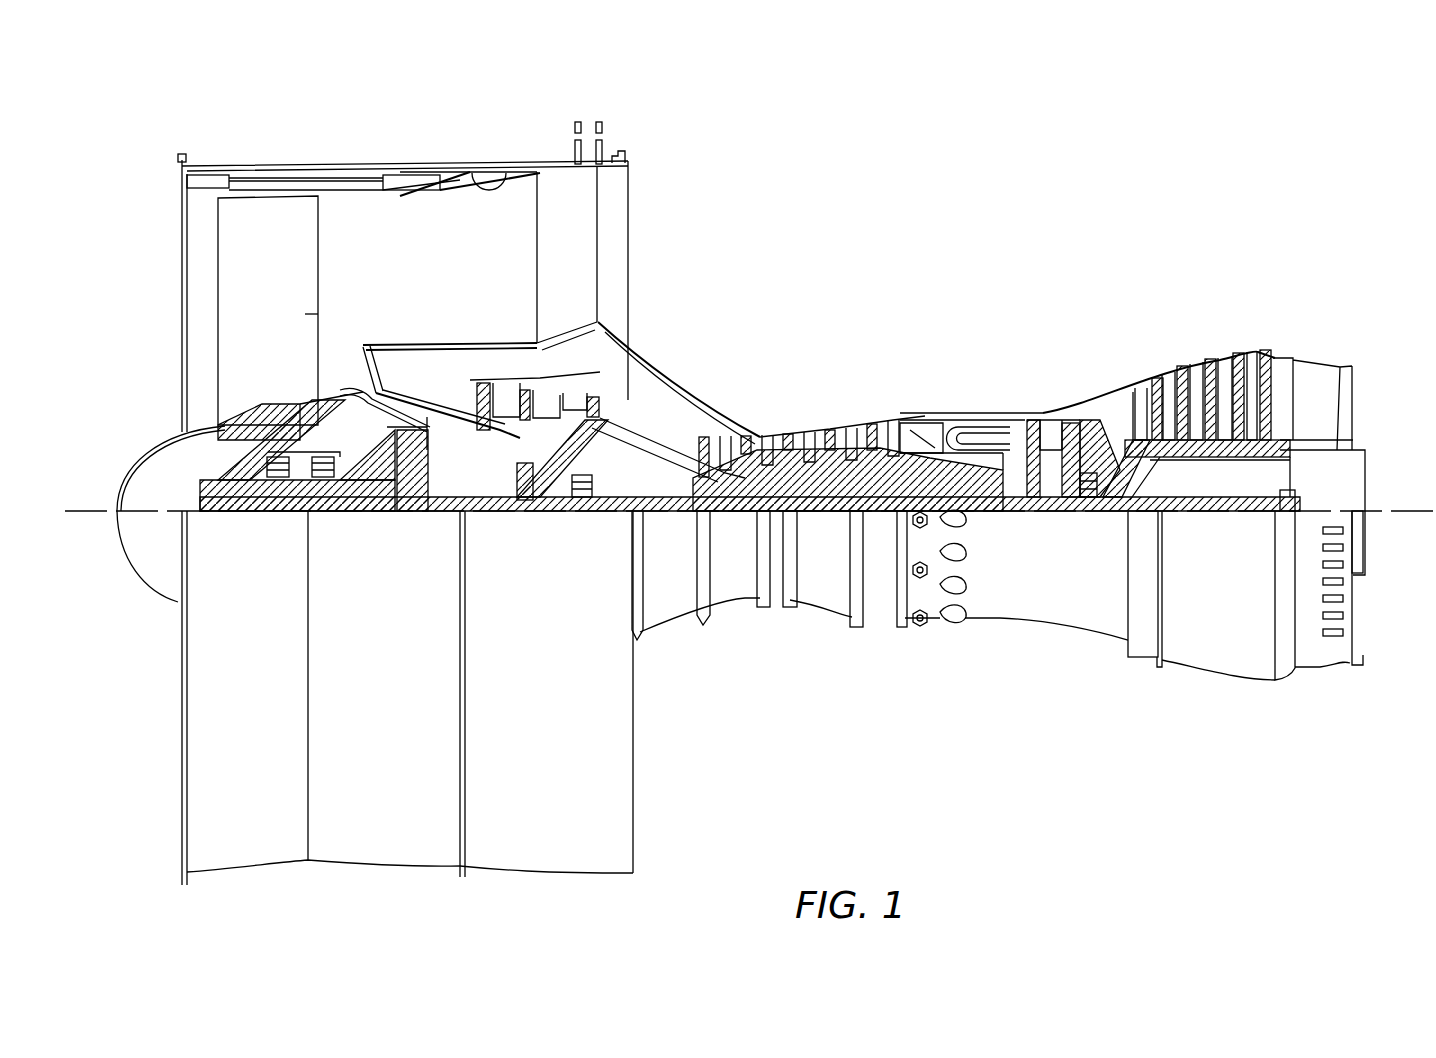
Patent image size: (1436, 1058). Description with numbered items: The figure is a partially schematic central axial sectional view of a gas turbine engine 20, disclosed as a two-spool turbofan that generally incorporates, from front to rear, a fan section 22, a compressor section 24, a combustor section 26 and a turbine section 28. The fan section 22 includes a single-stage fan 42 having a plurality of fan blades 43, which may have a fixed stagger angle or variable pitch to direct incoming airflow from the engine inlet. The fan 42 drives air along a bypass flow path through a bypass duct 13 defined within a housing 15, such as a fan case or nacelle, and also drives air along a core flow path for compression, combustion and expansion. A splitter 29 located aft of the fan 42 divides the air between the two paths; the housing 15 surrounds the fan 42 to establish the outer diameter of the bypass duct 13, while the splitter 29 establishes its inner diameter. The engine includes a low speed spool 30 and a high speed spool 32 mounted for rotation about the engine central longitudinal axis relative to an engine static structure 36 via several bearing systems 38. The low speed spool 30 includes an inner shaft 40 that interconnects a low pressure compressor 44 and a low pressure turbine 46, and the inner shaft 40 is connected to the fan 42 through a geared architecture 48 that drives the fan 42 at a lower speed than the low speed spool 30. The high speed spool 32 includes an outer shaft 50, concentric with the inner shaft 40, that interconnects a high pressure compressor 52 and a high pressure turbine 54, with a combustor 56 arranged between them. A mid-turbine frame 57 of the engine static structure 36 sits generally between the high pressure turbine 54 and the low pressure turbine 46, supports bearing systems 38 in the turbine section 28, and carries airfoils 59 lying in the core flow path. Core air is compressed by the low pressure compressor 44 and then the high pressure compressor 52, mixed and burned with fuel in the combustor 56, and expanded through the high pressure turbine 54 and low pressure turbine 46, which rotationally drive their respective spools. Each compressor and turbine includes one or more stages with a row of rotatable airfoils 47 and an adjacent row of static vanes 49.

The bypass duct 13 is at (496, 178).
The housing 15 is at (418, 168).
The gas turbine engine 20 is at (1027, 262).
The fan section 22 is at (328, 157).
The compressor section 24 is at (685, 412).
The combustor section 26 is at (958, 400).
The turbine section 28 is at (1157, 346).
The splitter 29 is at (372, 342).
The low speed spool 30 is at (836, 515).
The high speed spool 32 is at (872, 478).
The engine static structure 36 is at (878, 628).
The bearing systems 38 is at (596, 497).
The inner shaft 40 is at (657, 511).
The fan 42 is at (277, 302).
The fan blades 43 is at (305, 314).
The low pressure compressor 44 is at (533, 397).
The low pressure turbine 46 is at (1208, 354).
The rotatable airfoils 47 is at (484, 386).
The geared architecture 48 is at (405, 493).
The static vanes 49 is at (505, 385).
The outer shaft 50 is at (1000, 505).
The high pressure compressor 52 is at (805, 432).
The high pressure turbine 54 is at (1053, 418).
The combustor 56 is at (976, 440).
The mid-turbine frame 57 is at (1105, 396).
The airfoils 59 is at (1150, 466).